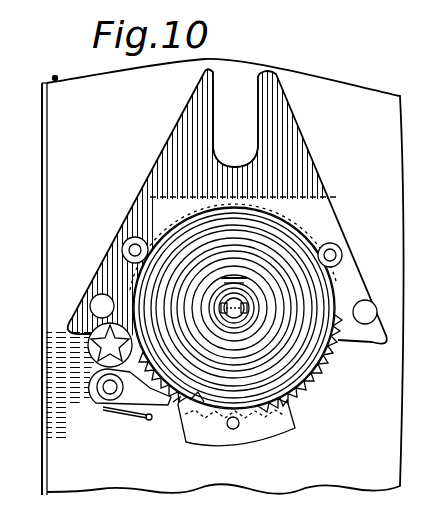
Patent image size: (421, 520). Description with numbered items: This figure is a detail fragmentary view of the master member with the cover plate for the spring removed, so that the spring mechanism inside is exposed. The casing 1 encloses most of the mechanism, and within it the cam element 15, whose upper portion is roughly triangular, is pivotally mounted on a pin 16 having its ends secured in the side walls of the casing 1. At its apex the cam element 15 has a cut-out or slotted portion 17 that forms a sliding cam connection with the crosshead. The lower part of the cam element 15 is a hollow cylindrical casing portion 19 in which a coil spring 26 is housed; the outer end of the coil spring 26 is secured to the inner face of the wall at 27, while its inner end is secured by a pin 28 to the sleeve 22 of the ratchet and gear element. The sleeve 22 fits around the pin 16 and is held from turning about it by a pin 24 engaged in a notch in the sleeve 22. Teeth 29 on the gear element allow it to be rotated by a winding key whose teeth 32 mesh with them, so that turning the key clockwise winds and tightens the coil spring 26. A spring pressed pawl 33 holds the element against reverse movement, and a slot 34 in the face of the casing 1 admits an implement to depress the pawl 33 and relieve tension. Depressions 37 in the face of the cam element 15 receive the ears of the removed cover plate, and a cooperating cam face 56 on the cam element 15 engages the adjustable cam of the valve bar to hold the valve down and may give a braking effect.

The casing 1 is at (42, 128).
The cam element 15 is at (303, 128).
The slotted portion 17 is at (214, 90).
The pin 16 is at (247, 302).
The hollow cylindrical casing portion 19 is at (250, 405).
The sleeve 22 is at (237, 330).
The pin 24 is at (210, 317).
The coil spring 26 is at (335, 348).
The spring attachment point 27 is at (320, 380).
The pin 28 is at (240, 274).
The teeth 29 is at (203, 350).
The teeth of the winding key 32 is at (80, 332).
The spring pressed pawl 33 is at (104, 408).
The slot 34 is at (138, 380).
The depressions 37 is at (127, 242).
The cooperating cam face 56 is at (272, 438).